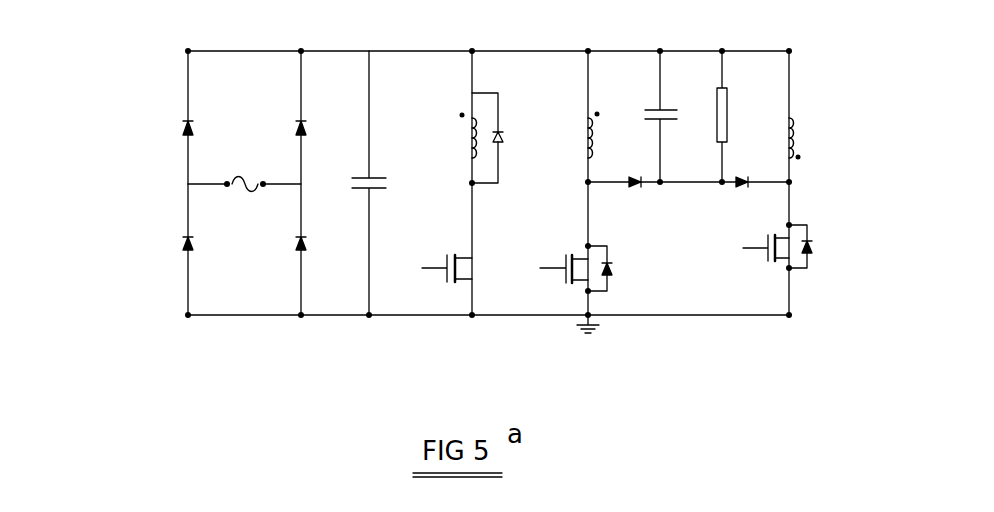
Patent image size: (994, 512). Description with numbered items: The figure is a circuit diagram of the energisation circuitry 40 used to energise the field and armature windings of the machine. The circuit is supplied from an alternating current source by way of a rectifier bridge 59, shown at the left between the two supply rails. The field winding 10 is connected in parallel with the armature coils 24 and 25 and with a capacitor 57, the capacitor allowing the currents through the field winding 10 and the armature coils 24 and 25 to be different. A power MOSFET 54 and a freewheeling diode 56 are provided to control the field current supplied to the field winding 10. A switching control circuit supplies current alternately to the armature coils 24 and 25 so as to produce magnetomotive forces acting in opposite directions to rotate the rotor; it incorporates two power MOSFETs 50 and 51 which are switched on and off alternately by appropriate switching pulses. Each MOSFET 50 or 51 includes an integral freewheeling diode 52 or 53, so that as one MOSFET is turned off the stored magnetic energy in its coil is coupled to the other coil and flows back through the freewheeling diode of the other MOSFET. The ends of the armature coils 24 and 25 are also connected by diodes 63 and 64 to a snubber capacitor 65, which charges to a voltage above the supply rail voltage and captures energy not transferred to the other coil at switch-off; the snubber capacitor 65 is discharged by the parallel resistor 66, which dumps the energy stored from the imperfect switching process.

The rectifier bridge 59 is at (247, 160).
The capacitor 57 is at (360, 192).
The field winding 10 is at (466, 140).
The freewheeling diode 56 is at (502, 138).
The power MOSFET 54 is at (446, 263).
The armature coil 24 is at (584, 146).
The power MOSFET 50 is at (565, 263).
The integral freewheeling diode 52 is at (612, 269).
The diode 63 is at (637, 188).
The diode 64 is at (739, 188).
The snubber capacitor 65 is at (655, 110).
The parallel resistor 66 is at (729, 118).
The armature coil 25 is at (794, 128).
The power MOSFET 51 is at (768, 252).
The integral freewheeling diode 53 is at (814, 247).
The energisation circuitry 40 is at (350, 348).